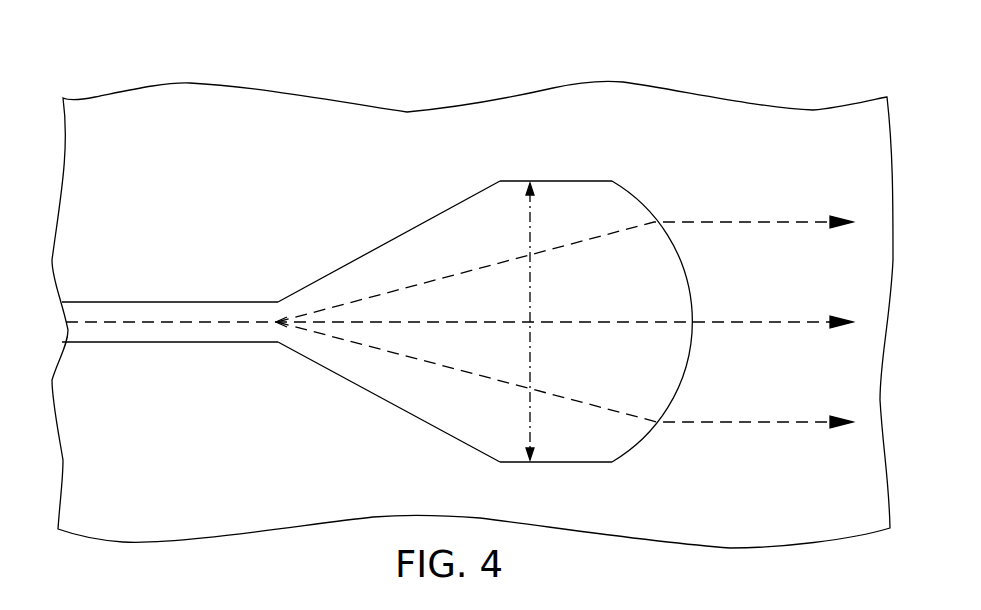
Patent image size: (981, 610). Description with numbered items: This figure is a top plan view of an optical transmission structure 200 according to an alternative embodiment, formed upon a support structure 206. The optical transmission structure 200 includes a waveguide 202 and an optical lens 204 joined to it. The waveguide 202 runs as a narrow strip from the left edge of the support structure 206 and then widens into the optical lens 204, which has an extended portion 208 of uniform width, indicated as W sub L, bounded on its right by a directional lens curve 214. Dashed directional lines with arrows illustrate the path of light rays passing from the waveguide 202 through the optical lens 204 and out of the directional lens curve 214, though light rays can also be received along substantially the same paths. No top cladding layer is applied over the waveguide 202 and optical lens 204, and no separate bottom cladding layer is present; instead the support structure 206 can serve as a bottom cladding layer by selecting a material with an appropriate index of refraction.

The optical transmission structure 200 is at (258, 238).
The waveguide 202 is at (162, 342).
The optical lens 204 is at (352, 385).
The support structure 206 is at (545, 90).
The extended portion 208 is at (612, 172).
The directional lens curve 214 is at (651, 212).